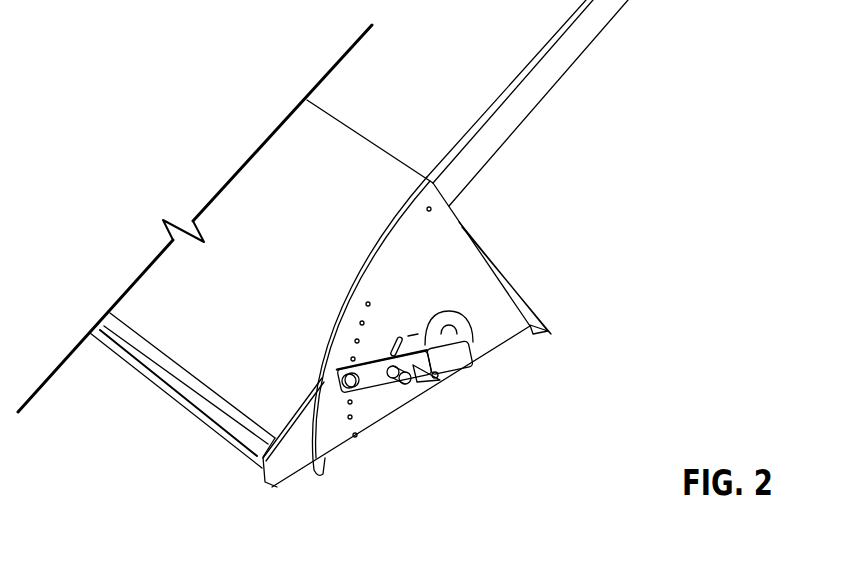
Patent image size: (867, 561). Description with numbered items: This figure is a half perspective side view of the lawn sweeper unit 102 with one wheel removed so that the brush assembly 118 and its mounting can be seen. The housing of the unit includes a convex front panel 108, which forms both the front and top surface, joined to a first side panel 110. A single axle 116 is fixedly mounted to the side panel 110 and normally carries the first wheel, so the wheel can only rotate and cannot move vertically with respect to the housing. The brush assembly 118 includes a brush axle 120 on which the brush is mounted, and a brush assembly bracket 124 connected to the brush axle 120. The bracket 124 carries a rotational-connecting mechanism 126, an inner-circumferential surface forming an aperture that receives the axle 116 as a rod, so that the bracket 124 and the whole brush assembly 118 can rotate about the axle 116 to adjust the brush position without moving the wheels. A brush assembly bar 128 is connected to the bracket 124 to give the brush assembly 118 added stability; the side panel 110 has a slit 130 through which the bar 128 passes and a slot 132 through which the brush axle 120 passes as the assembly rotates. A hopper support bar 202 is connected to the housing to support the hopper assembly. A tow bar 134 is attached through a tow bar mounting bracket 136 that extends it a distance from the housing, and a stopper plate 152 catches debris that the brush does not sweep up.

The lawn sweeper unit 102 is at (116, 125).
The front panel 108 is at (165, 280).
The hopper support bar 202 is at (528, 100).
The first side panel 110 is at (442, 225).
The stopper plate 152 is at (503, 285).
The tow bar 134 is at (180, 385).
The tow bar mounting bracket 136 is at (287, 457).
The brush assembly 118 is at (373, 404).
The brush assembly bracket 124 is at (441, 358).
The axle 116 is at (441, 318).
The slit 130 is at (455, 325).
The brush assembly bar 128 is at (479, 344).
The rotational-connecting mechanism 126 is at (413, 368).
The slot 132 is at (393, 352).
The brush axle 120 is at (412, 334).